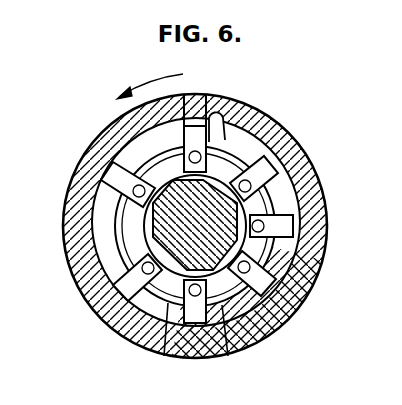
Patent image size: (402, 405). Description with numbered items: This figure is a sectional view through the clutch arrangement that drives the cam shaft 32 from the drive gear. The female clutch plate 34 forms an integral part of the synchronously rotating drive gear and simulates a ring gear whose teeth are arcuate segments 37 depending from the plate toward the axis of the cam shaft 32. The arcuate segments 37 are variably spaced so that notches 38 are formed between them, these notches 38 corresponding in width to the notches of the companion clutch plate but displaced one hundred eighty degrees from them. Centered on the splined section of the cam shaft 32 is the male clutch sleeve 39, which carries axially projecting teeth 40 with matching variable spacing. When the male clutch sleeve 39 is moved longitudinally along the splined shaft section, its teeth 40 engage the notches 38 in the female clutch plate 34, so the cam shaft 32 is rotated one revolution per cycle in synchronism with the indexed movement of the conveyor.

The cam shaft 32 is at (298, 190).
The female clutch plate 34 is at (262, 127).
The arcuate segments 37 is at (104, 237).
The notches 38 is at (285, 164).
The male clutch sleeve 39 is at (110, 146).
The teeth 40 is at (295, 229).